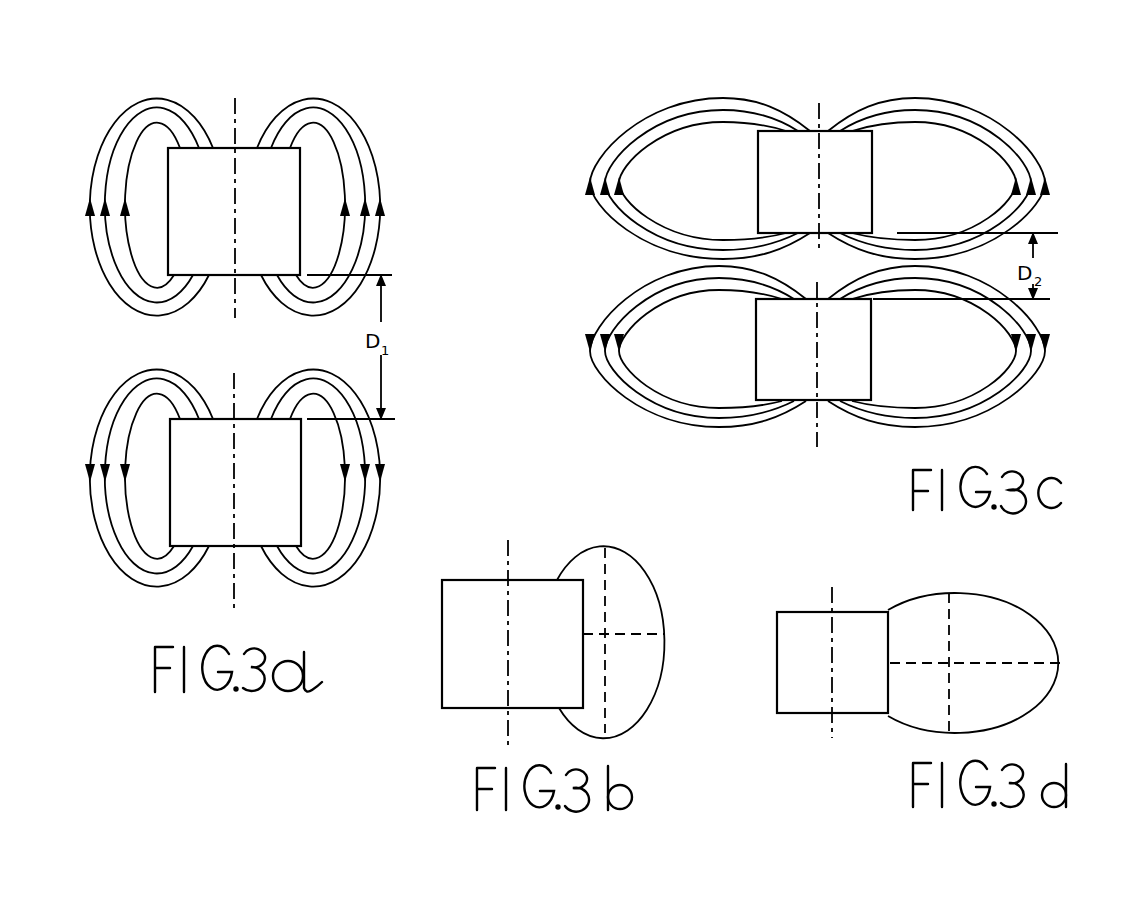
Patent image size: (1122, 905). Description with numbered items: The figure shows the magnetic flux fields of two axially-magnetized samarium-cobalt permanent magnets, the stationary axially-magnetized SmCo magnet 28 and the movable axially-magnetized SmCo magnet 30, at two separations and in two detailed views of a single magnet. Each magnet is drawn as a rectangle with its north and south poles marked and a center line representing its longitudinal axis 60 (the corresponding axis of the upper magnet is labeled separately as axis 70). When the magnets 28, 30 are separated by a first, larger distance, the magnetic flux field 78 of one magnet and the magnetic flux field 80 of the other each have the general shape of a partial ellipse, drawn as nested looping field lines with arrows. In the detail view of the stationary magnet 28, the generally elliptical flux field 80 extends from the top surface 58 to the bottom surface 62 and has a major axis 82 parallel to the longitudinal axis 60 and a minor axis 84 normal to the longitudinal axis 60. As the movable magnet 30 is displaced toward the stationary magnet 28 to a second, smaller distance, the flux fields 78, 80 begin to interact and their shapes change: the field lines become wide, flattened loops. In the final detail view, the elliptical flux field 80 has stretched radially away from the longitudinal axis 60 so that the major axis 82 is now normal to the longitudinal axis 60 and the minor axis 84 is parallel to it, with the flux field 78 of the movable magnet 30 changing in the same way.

In FIG. 3A, the stationary axially-magnetized SmCo magnet 28 is at (187, 500).
In FIG. 3C, the stationary axially-magnetized SmCo magnet 28 is at (770, 378).
In FIG. 3B, the stationary axially-magnetized SmCo magnet 28 is at (462, 648).
In FIG. 3D, the stationary axially-magnetized SmCo magnet 28 is at (807, 687).
In FIG. 3A, the movable axially-magnetized SmCo magnet 30 is at (185, 245).
In FIG. 3C, the movable axially-magnetized SmCo magnet 30 is at (777, 143).
In FIG. 3B, the top surface 58 is at (468, 580).
In FIG. 3A, the longitudinal axis 60 is at (237, 388).
In FIG. 3C, the longitudinal axis 60 is at (818, 425).
In FIG. 3B, the longitudinal axis 60 is at (512, 557).
In FIG. 3D, the longitudinal axis 60 is at (832, 598).
In FIG. 3B, the bottom surface 62 is at (463, 713).
In FIG. 3A, the axis of first magnet 70 is at (237, 120).
In FIG. 3C, the axis of first magnet 70 is at (823, 112).
In FIG. 3A, the magnetic flux field 78 is at (102, 125).
In FIG. 3C, the magnetic flux field 78 is at (652, 95).
In FIG. 3A, the magnetic flux field 80 is at (102, 395).
In FIG. 3C, the magnetic flux field 80 is at (632, 272).
In FIG. 3B, the magnetic flux field 80 is at (643, 660).
In FIG. 3D, the magnetic flux field 80 is at (990, 639).
In FIG. 3B, the major axis 82 is at (607, 593).
In FIG. 3D, the major axis 82 is at (1027, 663).
In FIG. 3B, the minor axis 84 is at (638, 634).
In FIG. 3D, the minor axis 84 is at (953, 617).